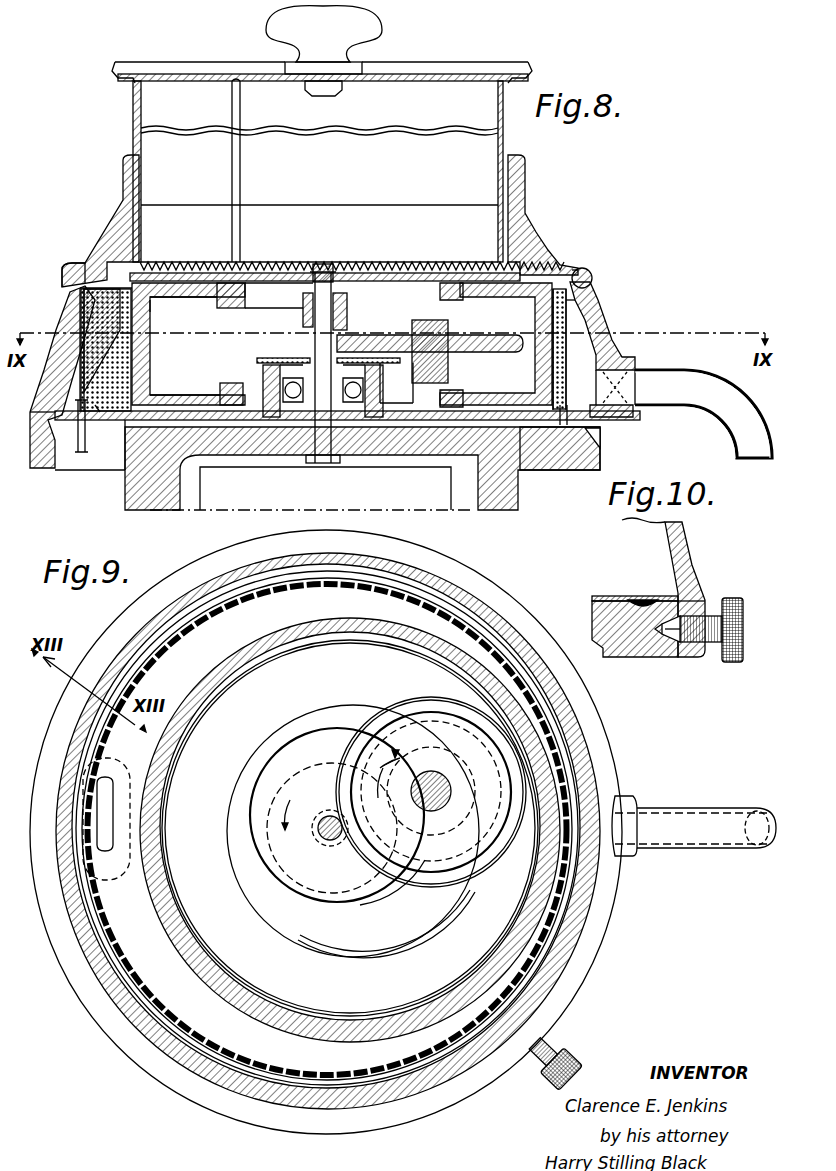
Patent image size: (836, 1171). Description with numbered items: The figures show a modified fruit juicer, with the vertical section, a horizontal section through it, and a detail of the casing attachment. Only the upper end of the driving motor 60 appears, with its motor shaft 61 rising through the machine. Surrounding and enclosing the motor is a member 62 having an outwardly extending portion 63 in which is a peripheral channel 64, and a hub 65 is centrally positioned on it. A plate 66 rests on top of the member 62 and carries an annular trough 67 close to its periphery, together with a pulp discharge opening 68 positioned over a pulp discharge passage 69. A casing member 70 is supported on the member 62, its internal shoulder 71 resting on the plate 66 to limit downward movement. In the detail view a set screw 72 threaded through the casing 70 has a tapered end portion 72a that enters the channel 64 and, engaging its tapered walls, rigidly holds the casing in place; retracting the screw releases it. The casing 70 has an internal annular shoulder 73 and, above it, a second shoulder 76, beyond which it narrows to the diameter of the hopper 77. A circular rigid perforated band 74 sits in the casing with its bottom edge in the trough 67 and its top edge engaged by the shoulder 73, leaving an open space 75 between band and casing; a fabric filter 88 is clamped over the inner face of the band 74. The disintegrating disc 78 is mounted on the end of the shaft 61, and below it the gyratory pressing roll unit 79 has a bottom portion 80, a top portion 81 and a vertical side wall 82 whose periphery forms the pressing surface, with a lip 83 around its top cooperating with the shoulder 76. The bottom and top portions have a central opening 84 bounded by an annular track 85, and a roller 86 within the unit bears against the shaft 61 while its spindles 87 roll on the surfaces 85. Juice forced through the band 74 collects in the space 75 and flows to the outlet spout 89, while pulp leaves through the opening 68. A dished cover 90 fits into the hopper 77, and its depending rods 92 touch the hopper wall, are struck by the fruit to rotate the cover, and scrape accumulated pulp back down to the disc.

In FIG. 8, the driving motor upper end 60 is at (310, 488).
In FIG. 8, the motor shaft 61 is at (315, 345).
In FIG. 9, the motor shaft 61 is at (322, 838).
In FIG. 8, the member surrounding motor 62 is at (505, 505).
In FIG. 8, the outwardly extending portion 63 is at (566, 460).
In FIG. 10, the outwardly extending portion 63 is at (592, 614).
In FIG. 8, the peripheral channel 64 is at (600, 443).
In FIG. 10, the peripheral channel 64 is at (665, 634).
In FIG. 8, the hub 65 is at (325, 349).
In FIG. 8, the plate 66 is at (150, 422).
In FIG. 9, the plate 66 is at (143, 965).
In FIG. 10, the plate 66 is at (600, 596).
In FIG. 8, the annular trough 67 is at (90, 448).
In FIG. 10, the annular trough 67 is at (645, 600).
In FIG. 8, the pulp discharge opening 68 is at (100, 414).
In FIG. 9, the pulp discharge opening 68 is at (105, 782).
In FIG. 8, the pulp discharge passage 69 is at (100, 468).
In FIG. 9, the pulp discharge passage 69 is at (120, 880).
In FIG. 8, the casing member 70 is at (592, 300).
In FIG. 9, the casing member 70 is at (90, 980).
In FIG. 10, the casing member 70 is at (692, 545).
In FIG. 8, the internal shoulder 71 is at (55, 408).
In FIG. 10, the internal shoulder 71 is at (697, 592).
In FIG. 9, the set screw 72 is at (562, 1045).
In FIG. 10, the set screw 72 is at (712, 645).
In FIG. 10, the tapered end portion 72a is at (676, 644).
In FIG. 8, the internal annular shoulder 73 is at (62, 278).
In FIG. 8, the perforated band 74 is at (80, 300).
In FIG. 9, the perforated band 74 is at (197, 1020).
In FIG. 8, the open space 75 is at (600, 355).
In FIG. 8, the second shoulder 76 is at (100, 268).
In FIG. 8, the hopper 77 is at (152, 140).
In FIG. 8, the disintegrating disc 78 is at (296, 270).
In FIG. 8, the gyratory pressing roll unit 79 is at (157, 382).
In FIG. 9, the gyratory pressing roll unit 79 is at (230, 668).
In FIG. 8, the bottom portion 80 is at (196, 404).
In FIG. 9, the bottom portion 80 is at (226, 930).
In FIG. 8, the top portion 81 is at (185, 346).
In FIG. 8, the vertical side wall 82 is at (151, 346).
In FIG. 9, the vertical side wall 82 is at (163, 810).
In FIG. 8, the lip 83 is at (136, 276).
In FIG. 8, the central opening 84 is at (378, 290).
In FIG. 9, the central opening 84 is at (311, 918).
In FIG. 8, the annular track 85 is at (250, 308).
In FIG. 9, the annular track 85 is at (352, 930).
In FIG. 8, the roller 86 is at (394, 338).
In FIG. 9, the roller 86 is at (431, 792).
In FIG. 8, the spindles 87 is at (455, 300).
In FIG. 9, the spindles 87 is at (447, 783).
In FIG. 8, the fabric filter 88 is at (82, 314).
In FIG. 9, the fabric filter 88 is at (200, 1030).
In FIG. 8, the outlet spout 89 is at (694, 385).
In FIG. 9, the outlet spout 89 is at (696, 815).
In FIG. 8, the cover 90 is at (432, 72).
In FIG. 8, the rods 92 is at (241, 163).